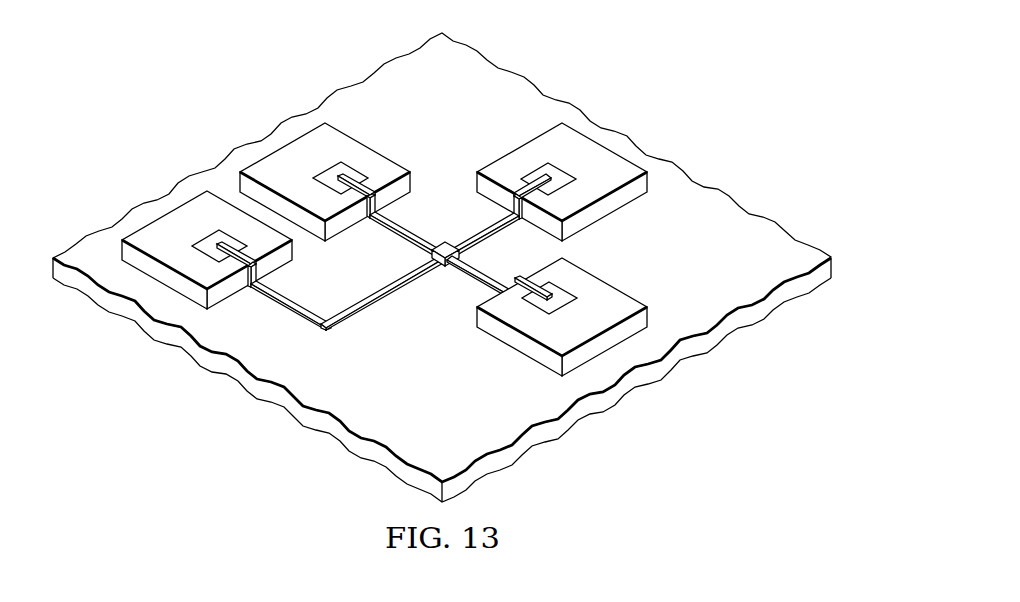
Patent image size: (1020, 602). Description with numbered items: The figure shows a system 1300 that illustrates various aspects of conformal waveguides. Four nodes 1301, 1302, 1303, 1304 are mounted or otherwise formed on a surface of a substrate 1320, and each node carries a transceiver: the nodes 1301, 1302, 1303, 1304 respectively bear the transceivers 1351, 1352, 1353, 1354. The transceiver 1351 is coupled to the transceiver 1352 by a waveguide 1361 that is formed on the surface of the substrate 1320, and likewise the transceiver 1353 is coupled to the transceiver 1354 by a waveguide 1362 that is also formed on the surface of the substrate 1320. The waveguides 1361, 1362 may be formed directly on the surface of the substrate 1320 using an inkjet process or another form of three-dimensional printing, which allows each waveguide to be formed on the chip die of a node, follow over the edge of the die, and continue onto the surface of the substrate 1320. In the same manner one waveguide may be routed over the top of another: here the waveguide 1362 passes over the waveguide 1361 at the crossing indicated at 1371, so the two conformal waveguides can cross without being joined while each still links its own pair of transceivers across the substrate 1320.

The system 1300 is at (439, 254).
The substrate 1320 is at (485, 73).
The node 1301 is at (326, 161).
The node 1302 is at (543, 304).
The node 1303 is at (558, 161).
The node 1304 is at (169, 238).
The transceiver 1351 is at (338, 172).
The transceiver 1352 is at (557, 293).
The transceiver 1353 is at (548, 168).
The transceiver 1354 is at (213, 242).
The waveguide 1361 is at (415, 240).
The waveguide 1362 is at (297, 312).
The waveguide crossing 1371 is at (444, 244).